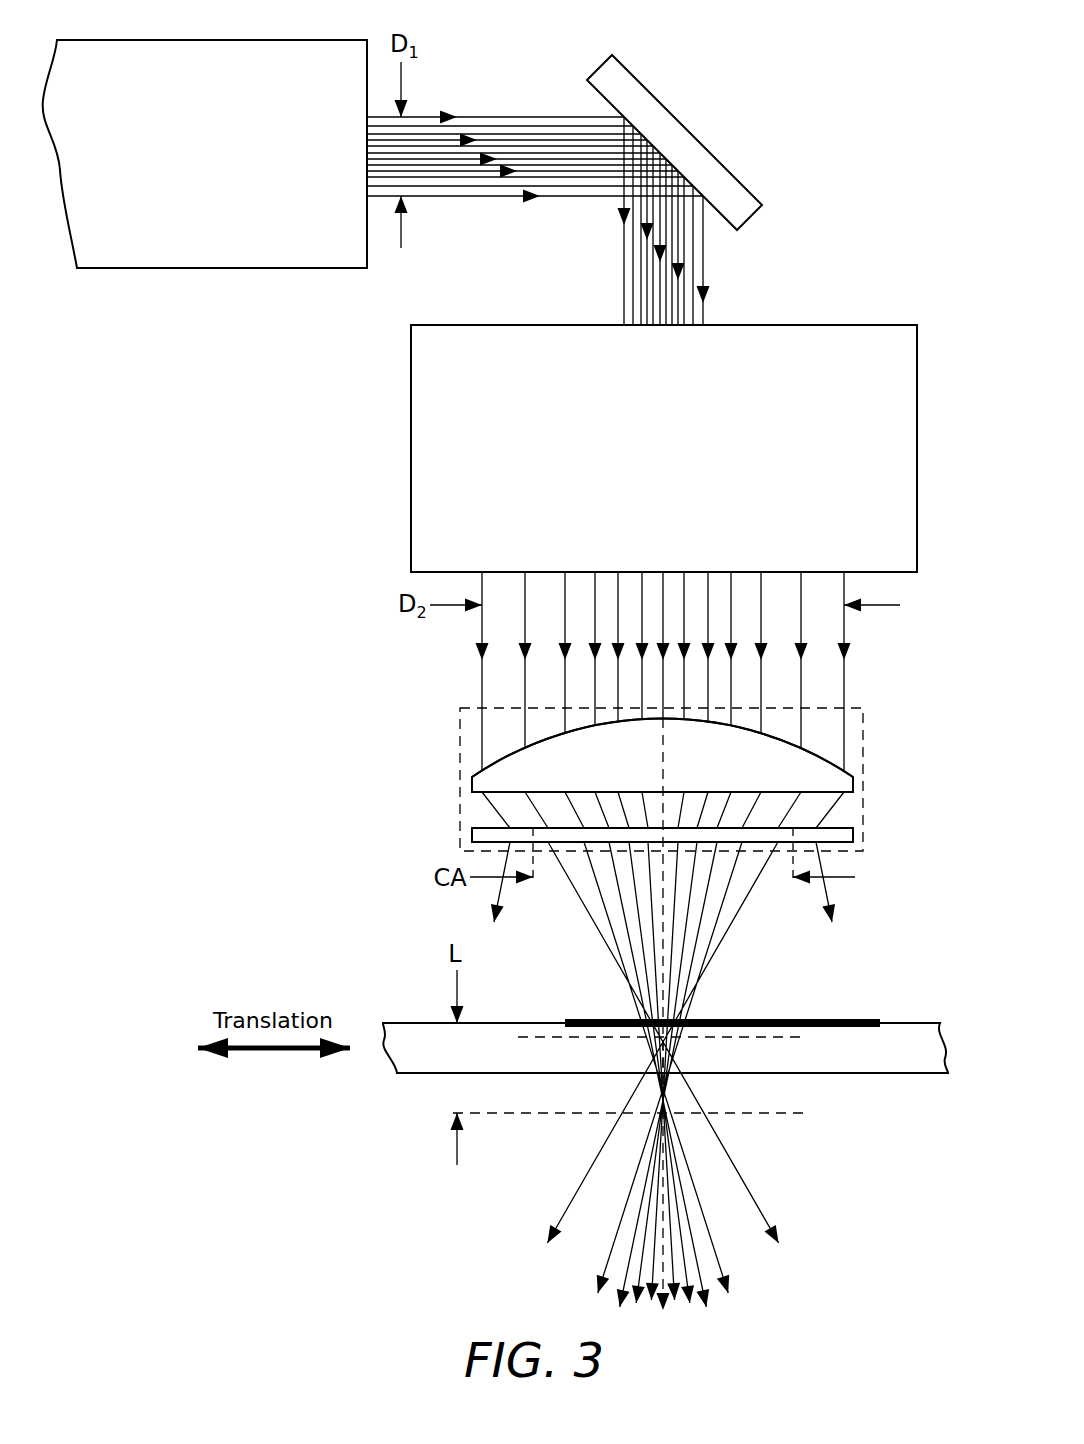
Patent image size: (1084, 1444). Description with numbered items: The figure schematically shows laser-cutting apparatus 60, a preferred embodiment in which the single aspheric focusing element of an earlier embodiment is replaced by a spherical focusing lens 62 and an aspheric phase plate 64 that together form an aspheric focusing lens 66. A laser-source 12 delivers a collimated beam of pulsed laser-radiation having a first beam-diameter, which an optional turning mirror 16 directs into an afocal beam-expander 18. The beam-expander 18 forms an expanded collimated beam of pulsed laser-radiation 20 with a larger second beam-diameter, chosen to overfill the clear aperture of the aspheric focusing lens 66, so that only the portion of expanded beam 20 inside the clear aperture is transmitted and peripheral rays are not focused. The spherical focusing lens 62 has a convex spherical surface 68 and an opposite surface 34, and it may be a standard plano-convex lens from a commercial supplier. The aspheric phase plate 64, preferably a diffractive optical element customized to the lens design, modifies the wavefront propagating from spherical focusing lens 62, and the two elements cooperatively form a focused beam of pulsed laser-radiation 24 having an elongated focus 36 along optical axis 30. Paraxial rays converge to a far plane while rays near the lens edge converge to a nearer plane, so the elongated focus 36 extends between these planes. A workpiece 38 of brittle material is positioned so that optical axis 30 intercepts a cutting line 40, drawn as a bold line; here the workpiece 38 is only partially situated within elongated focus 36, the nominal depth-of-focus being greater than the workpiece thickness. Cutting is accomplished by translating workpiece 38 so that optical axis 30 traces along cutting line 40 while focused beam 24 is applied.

The laser-source 12 is at (173, 265).
The turning mirror 16 is at (703, 157).
The afocal beam-expander 18 is at (416, 421).
The expanded beam of pulsed laser-radiation 20 is at (855, 685).
The focused beam of pulsed laser-radiation 24 is at (585, 918).
The optical axis 30 is at (665, 1227).
The opposite surface 34 is at (848, 795).
The elongated focus 36 is at (672, 1092).
The workpiece 38 is at (912, 1020).
The cutting line 40 is at (852, 1020).
The laser-cutting apparatus 60 is at (246, 1188).
The spherical focusing lens 62 is at (472, 785).
The aspheric phase plate 64 is at (472, 833).
The aspheric focusing lens 66 is at (458, 740).
The spherical surface 68 is at (853, 775).